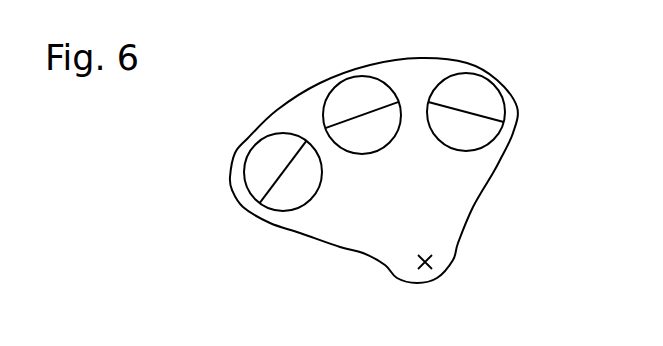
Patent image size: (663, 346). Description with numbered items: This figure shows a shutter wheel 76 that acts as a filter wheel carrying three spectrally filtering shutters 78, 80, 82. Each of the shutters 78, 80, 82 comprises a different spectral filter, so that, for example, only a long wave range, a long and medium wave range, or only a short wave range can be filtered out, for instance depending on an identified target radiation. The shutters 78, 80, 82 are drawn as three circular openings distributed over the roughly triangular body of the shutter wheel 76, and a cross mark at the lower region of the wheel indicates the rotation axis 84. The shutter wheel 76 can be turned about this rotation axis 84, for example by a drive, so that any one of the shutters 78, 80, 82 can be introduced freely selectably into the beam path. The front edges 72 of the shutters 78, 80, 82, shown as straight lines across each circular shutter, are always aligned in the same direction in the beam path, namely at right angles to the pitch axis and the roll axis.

The front edge 72 is at (285, 175).
The shutter wheel 76 is at (478, 172).
The shutter 78 is at (270, 168).
The shutter 80 is at (357, 105).
The shutter 82 is at (485, 98).
The rotation axis 84 is at (430, 263).